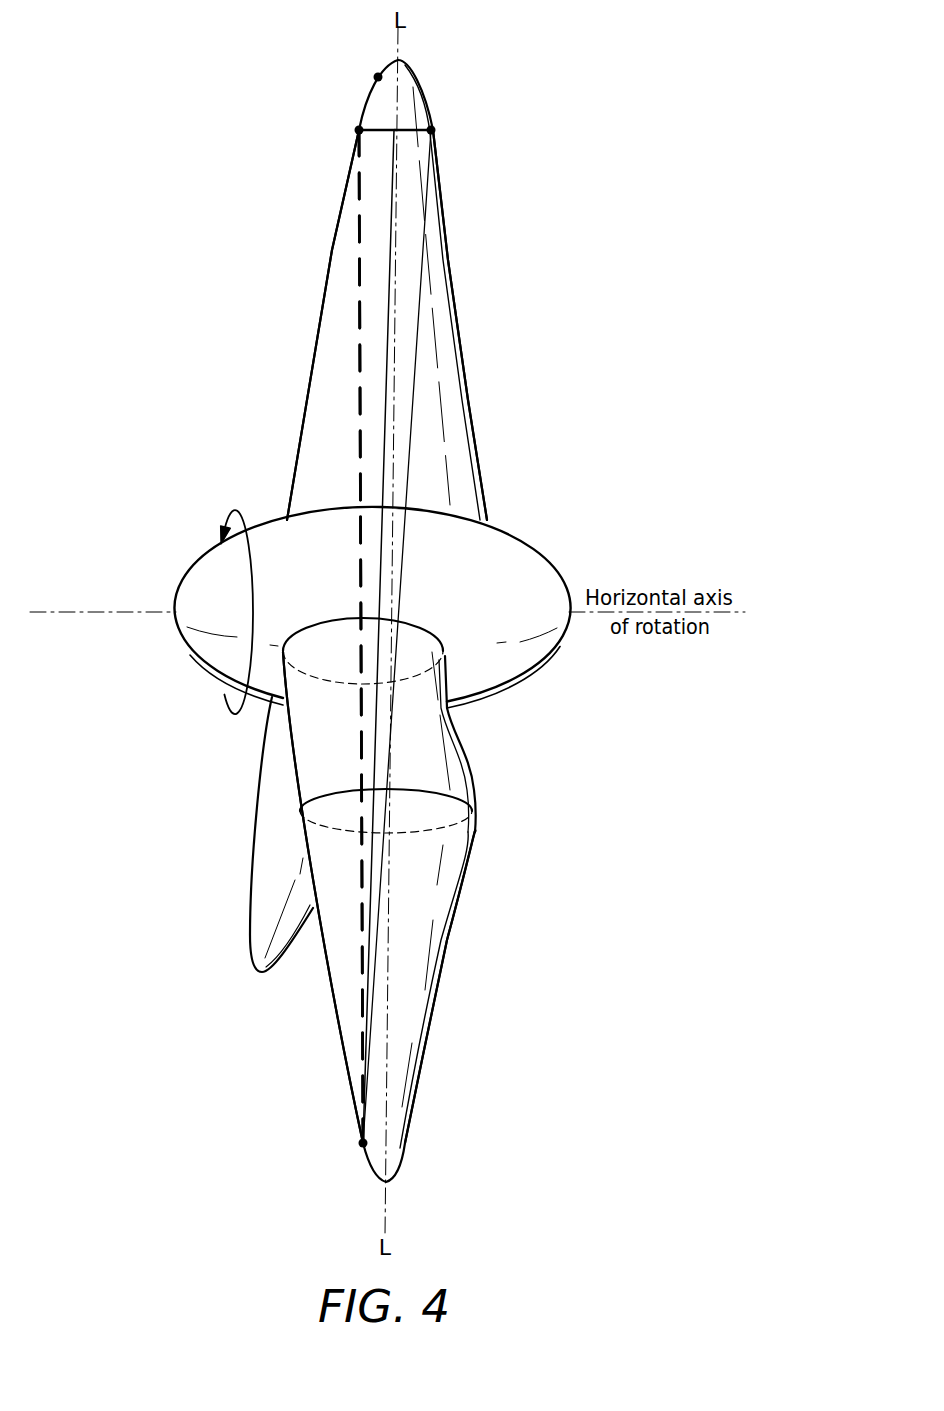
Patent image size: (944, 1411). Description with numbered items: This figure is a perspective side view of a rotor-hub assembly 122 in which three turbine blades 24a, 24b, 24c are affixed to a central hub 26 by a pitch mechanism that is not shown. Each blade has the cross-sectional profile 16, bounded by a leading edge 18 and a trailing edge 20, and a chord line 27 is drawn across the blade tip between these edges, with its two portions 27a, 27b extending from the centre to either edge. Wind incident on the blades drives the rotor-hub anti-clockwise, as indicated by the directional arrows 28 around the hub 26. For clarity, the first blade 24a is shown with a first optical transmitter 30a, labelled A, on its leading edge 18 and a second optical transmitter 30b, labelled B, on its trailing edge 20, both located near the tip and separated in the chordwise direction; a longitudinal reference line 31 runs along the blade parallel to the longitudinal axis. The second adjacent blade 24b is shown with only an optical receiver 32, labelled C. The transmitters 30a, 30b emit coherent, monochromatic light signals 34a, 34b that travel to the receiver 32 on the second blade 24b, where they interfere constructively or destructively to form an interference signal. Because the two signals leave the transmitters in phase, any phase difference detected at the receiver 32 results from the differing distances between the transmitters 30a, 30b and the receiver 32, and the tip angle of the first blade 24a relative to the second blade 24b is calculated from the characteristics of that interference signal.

The cross-sectional profile 16 is at (445, 802).
The leading edge 18 is at (332, 228).
The trailing edge 20 is at (448, 228).
The first blade 24a is at (465, 375).
The second blade 24b is at (447, 932).
The third blade 24c is at (250, 866).
The central hub 26 is at (190, 590).
The blade centre line 27 is at (388, 316).
The first chord portion 27a is at (384, 133).
The second chord portion 27b is at (406, 133).
The directional arrows 28 is at (222, 695).
The first optical transmitter 30a is at (357, 129).
The second optical transmitter 30b is at (433, 129).
The reference line 31 is at (362, 760).
The optical receiver 32 is at (376, 75).
The first light signal 34a is at (357, 465).
The second light signal 34b is at (407, 466).
The rotor assembly 122 is at (516, 278).